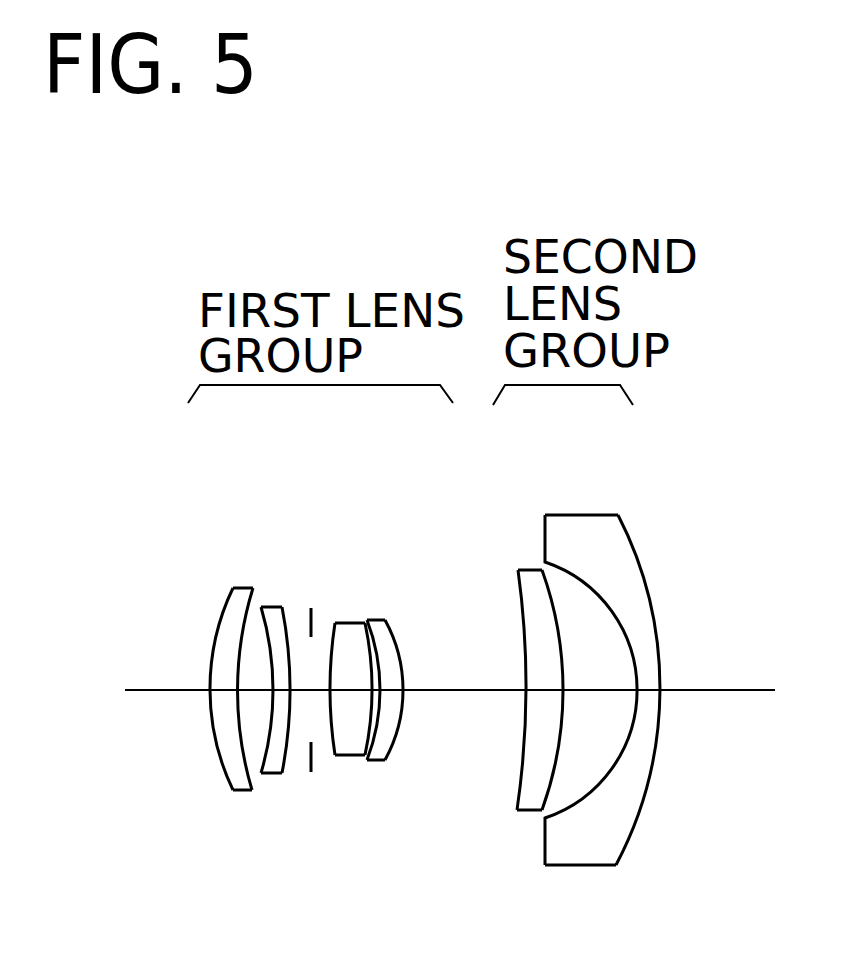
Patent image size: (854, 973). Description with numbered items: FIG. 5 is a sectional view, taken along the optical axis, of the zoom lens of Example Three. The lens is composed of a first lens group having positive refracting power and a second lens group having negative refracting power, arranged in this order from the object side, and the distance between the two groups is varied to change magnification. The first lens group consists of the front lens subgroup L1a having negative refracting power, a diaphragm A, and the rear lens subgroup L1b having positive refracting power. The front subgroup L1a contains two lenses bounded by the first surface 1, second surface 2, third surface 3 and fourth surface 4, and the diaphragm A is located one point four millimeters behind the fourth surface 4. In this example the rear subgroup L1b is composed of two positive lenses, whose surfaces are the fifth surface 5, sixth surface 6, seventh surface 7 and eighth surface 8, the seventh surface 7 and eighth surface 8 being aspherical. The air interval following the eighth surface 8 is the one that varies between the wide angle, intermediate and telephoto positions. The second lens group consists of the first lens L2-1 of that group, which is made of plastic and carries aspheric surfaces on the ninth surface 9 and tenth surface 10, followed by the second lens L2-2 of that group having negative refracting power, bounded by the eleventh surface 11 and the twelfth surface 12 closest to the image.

The first lens surface 1 is at (217, 738).
The second lens surface 2 is at (242, 743).
The third lens surface 3 is at (262, 748).
The fourth lens surface 4 is at (292, 745).
The fifth lens surface 5 is at (331, 742).
The sixth lens surface 6 is at (366, 727).
The seventh lens surface 7 is at (366, 727).
The eighth lens surface 8 is at (399, 748).
The ninth lens surface 9 is at (519, 772).
The tenth lens surface 10 is at (557, 768).
The eleventh lens surface 11 is at (626, 746).
The twelfth lens surface 12 is at (658, 750).
The diaphragm A is at (311, 620).
The 1a lens subgroup L1a is at (305, 497).
The 1b lens subgroup L1b is at (438, 497).
The (2-1)th lens L2-1 is at (527, 570).
The (2-2)th lens L2-2 is at (632, 470).